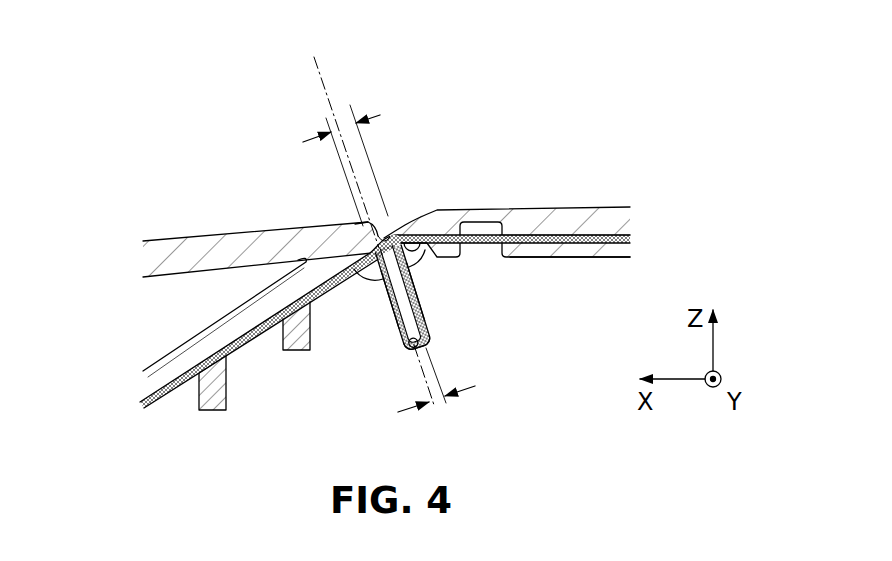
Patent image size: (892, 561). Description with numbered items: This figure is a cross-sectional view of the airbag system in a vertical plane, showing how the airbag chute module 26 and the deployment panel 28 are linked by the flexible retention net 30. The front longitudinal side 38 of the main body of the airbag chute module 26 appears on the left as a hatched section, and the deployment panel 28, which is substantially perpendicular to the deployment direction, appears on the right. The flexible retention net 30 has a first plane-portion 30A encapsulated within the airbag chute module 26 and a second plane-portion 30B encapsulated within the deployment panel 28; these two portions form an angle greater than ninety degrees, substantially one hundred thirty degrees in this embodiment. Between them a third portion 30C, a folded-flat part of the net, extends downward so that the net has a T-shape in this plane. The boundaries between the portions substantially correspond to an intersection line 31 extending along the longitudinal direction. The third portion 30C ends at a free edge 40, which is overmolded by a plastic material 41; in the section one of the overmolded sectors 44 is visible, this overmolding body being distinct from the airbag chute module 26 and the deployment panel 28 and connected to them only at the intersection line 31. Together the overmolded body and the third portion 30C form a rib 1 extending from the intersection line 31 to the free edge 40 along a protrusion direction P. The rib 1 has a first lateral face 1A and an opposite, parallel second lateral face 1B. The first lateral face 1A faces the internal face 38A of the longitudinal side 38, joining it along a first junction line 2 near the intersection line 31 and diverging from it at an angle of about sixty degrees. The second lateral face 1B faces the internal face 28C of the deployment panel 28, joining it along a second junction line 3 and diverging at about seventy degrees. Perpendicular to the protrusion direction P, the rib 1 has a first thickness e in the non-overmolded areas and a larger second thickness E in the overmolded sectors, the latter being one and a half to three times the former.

The rib 1 is at (444, 340).
The first lateral face 1A is at (400, 295).
The second lateral face 1B is at (416, 291).
The first junction line 2 is at (372, 237).
The second junction line 3 is at (421, 236).
The airbag chute module 26 is at (236, 319).
The deployment panel 28 is at (488, 206).
The internal face of the deployment panel 28C is at (582, 258).
The flexible retention net 30 is at (601, 233).
The first plane-portion 30A is at (192, 375).
The second plane-portion 30B is at (541, 234).
The third portion 30C is at (416, 298).
The intersection line 31 is at (387, 240).
The longitudinal side 38 is at (240, 282).
The internal face of the longitudinal side 38A is at (316, 302).
The free edge 40 is at (413, 342).
The plastic material 41 is at (390, 299).
The overmolded sector 44 is at (418, 344).
The protrusion direction P is at (326, 74).
The second thickness E is at (331, 125).
The first thickness e is at (437, 404).